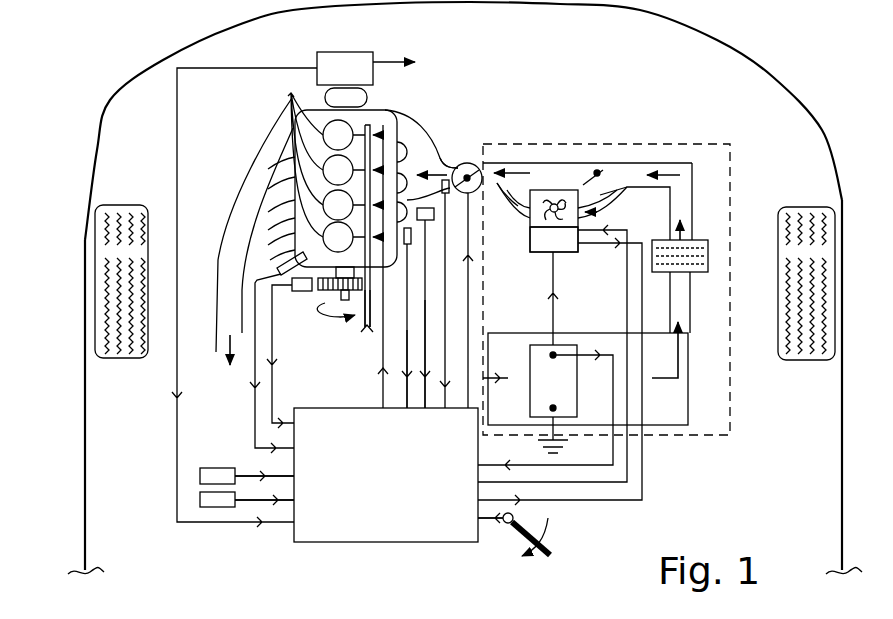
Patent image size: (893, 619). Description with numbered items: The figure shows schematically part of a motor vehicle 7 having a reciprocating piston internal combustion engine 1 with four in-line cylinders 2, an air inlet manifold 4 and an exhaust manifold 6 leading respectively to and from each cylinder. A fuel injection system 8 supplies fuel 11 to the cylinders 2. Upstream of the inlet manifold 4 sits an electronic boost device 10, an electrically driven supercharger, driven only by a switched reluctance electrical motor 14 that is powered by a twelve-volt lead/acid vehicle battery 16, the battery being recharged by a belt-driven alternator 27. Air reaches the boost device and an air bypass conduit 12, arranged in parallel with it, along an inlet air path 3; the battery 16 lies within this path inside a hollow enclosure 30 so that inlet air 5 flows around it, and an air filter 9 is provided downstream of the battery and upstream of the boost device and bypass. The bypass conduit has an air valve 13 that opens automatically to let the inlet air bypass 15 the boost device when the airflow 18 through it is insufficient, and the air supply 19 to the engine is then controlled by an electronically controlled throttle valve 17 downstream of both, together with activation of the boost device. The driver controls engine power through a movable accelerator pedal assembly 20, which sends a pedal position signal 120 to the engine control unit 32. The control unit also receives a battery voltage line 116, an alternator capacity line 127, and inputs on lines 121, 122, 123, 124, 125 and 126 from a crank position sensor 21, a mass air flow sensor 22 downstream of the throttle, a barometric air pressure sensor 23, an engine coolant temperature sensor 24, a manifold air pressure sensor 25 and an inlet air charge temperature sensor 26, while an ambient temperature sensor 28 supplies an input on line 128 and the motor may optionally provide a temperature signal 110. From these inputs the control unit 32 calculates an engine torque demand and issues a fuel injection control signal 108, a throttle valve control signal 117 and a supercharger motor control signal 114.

The internal combustion engine 1 is at (270, 131).
The cylinders 2 is at (295, 159).
The inlet air path 3 is at (680, 163).
The air inlet manifold 4 is at (407, 133).
The inlet air 5 is at (690, 334).
The exhaust manifold 6 is at (242, 186).
The motor vehicle 7 is at (162, 58).
The fuel injection system 8 is at (366, 129).
The air filter 9 is at (708, 256).
The electronic boost device 10 is at (540, 188).
The fuel 11 is at (372, 340).
The air bypass conduit 12 is at (575, 182).
The air valve 13 is at (603, 170).
The switched reluctance electrical motor 14 is at (578, 246).
The bypass 15 is at (493, 194).
The vehicle battery 16 is at (577, 380).
The throttle valve 17 is at (474, 163).
The airflow 18 is at (613, 194).
The air supply 19 is at (442, 180).
The accelerator pedal assembly 20 is at (530, 523).
The crank position sensor 21 is at (301, 291).
The mass air flow sensor 22 is at (446, 160).
The barometric air pressure sensor 23 is at (200, 474).
The engine coolant temperature sensor 24 is at (277, 262).
The manifold air pressure sensor 25 is at (413, 242).
The inlet air charge temperature sensor 26 is at (434, 216).
The alternator 27 is at (341, 52).
The ambient temperature sensor 28 is at (217, 507).
The hollow enclosure 30 is at (732, 437).
The engine control unit 32 is at (388, 542).
The fuel injection control signal 108 is at (383, 394).
The temperature signal 110 is at (618, 486).
The supercharger motor control signal 114 is at (643, 489).
The battery voltage input line 116 is at (614, 452).
The throttle valve control signal 117 is at (469, 313).
The accelerator pedal position signal 120 is at (486, 521).
The crank position input line 121 is at (274, 406).
The mass air flow input line 122 is at (447, 280).
The barometric air pressure input line 123 is at (265, 476).
The engine coolant temperature input line 124 is at (255, 412).
The manifold air pressure input line 125 is at (405, 360).
The inlet air charge temperature input line 126 is at (423, 340).
The alternator input line 127 is at (180, 523).
The ambient temperature input line 128 is at (247, 500).